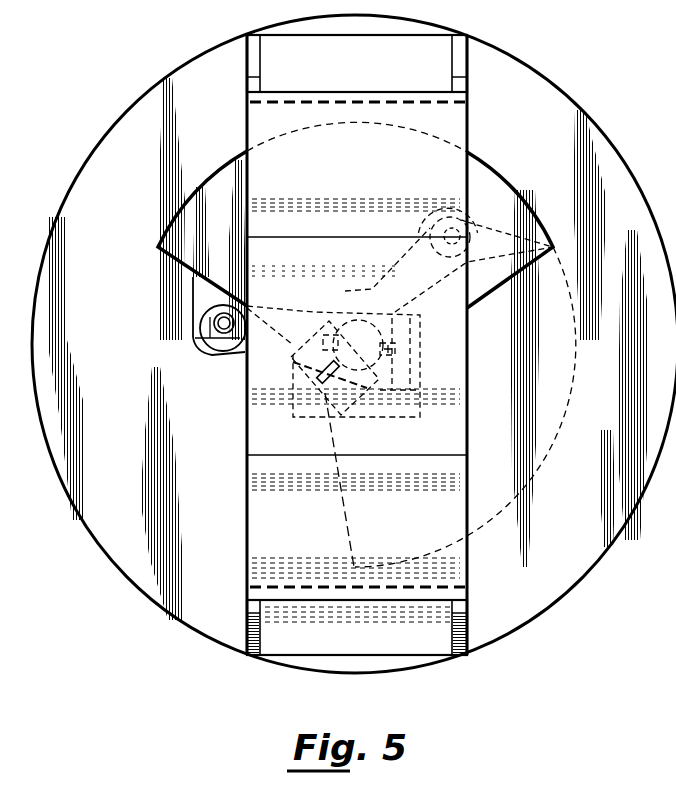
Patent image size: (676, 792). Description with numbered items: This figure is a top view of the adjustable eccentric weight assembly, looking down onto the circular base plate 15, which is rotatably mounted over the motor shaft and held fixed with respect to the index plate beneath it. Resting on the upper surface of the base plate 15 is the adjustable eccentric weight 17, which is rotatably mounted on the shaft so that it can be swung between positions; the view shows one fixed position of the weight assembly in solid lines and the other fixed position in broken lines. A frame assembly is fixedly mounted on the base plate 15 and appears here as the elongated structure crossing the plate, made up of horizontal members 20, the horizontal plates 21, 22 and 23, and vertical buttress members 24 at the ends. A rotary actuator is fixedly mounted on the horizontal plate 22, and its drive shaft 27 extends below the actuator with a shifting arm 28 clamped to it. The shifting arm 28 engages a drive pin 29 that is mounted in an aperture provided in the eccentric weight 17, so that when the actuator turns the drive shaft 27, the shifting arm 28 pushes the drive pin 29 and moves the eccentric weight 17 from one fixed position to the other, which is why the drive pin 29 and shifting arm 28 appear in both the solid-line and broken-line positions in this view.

The base plate 15 is at (73, 455).
The adjustable eccentric weight 17 is at (185, 246).
The horizontal members 20 is at (247, 471).
The horizontal plate 21 is at (385, 505).
The horizontal plate 22 is at (453, 422).
The horizontal plate 23 is at (343, 173).
The vertical buttress members 24 is at (254, 63).
The drive shaft 27 is at (344, 302).
The shifting arm 28 is at (226, 356).
The drive pin 29 is at (205, 333).